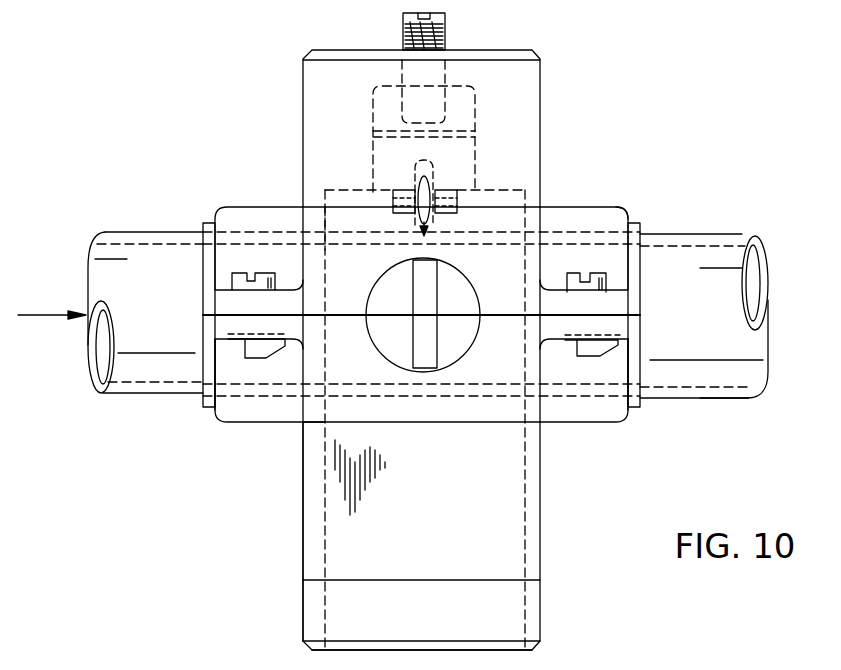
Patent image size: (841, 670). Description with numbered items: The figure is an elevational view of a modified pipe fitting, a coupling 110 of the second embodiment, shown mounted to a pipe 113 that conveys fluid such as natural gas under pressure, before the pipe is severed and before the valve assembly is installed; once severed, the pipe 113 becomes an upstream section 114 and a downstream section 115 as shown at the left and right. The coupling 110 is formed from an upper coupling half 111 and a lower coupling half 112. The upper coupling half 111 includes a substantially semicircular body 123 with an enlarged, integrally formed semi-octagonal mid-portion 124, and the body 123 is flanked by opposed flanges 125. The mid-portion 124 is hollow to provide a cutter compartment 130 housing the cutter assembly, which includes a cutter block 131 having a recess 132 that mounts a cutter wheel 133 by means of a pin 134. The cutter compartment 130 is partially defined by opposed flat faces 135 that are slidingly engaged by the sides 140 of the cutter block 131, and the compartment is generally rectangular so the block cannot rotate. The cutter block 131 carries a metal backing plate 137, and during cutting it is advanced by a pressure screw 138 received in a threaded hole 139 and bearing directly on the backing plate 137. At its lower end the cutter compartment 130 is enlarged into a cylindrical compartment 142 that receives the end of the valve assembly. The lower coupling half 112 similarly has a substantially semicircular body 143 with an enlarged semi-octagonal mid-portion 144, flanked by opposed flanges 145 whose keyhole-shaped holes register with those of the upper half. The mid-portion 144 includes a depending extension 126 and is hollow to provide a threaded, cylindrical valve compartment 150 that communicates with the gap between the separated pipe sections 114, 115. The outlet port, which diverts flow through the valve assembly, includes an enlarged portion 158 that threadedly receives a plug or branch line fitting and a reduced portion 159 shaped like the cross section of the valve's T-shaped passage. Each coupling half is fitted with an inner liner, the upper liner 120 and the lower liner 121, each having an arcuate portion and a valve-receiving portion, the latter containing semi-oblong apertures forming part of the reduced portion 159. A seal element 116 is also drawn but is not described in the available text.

The coupling 110 is at (604, 204).
The upper coupling half 111 is at (232, 207).
The lower coupling half 112 is at (247, 424).
The pipe 113 is at (740, 230).
The upstream pipe section 114 is at (145, 397).
The downstream pipe section 115 is at (715, 400).
The seal ring 116 is at (232, 281).
The upper liner 120 is at (641, 228).
The lower liner 121 is at (630, 424).
The semicircular body 123 is at (250, 207).
The semi-octagonal mid-portion 124 is at (303, 77).
The flanges 125 is at (210, 300).
The depending extension 126 is at (303, 605).
The cutter compartment 130 is at (470, 195).
The cutter block 131 is at (642, 183).
The recess 132 is at (432, 167).
The cutter wheel 133 is at (424, 180).
The pin 134 is at (395, 205).
The opposed flat faces 135 is at (474, 116).
The metal backing plate 137 is at (385, 126).
The pressure screw 138 is at (447, 28).
The threaded hole 139 is at (403, 68).
The sides of cutter block 140 is at (477, 142).
The cylindrical compartment 142 is at (325, 215).
The semicircular body 143 is at (302, 432).
The semi-octagonal mid-portion 144 is at (303, 522).
The flanges 145 is at (212, 325).
The valve compartment 150 is at (325, 535).
The enlarged portion 158 is at (460, 347).
The reduced portion 159 is at (440, 270).